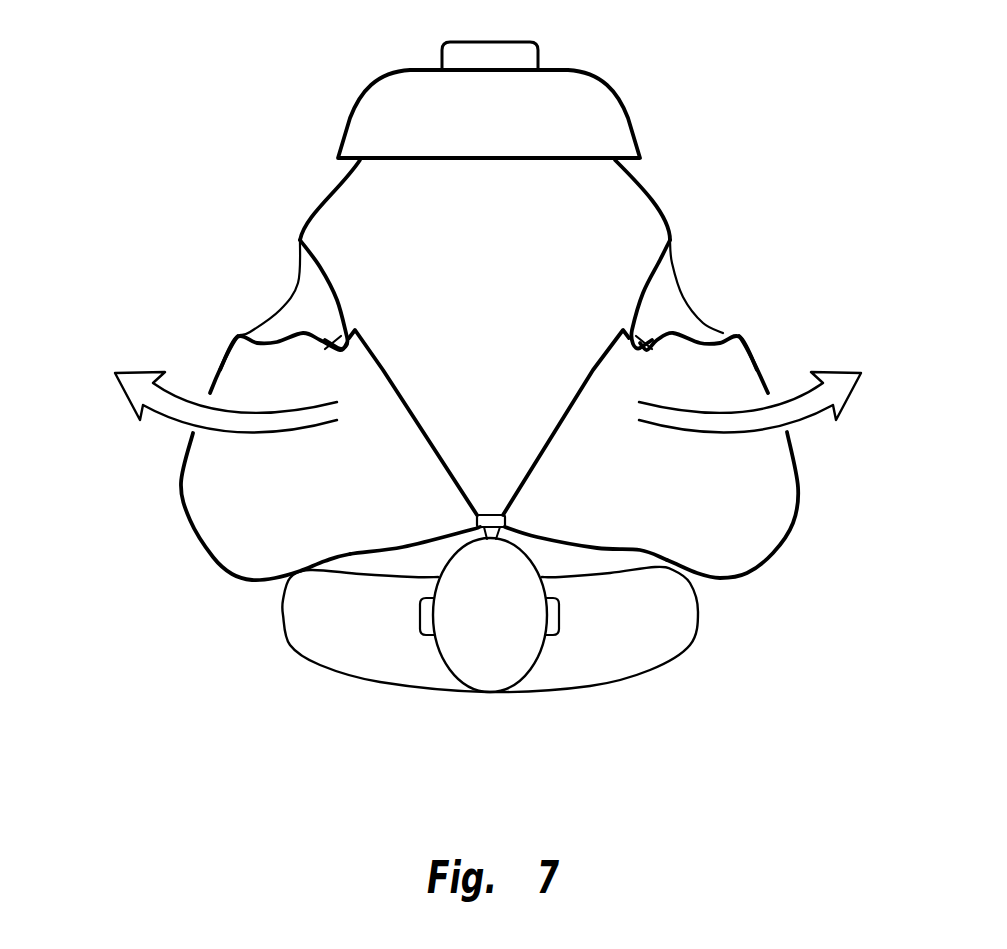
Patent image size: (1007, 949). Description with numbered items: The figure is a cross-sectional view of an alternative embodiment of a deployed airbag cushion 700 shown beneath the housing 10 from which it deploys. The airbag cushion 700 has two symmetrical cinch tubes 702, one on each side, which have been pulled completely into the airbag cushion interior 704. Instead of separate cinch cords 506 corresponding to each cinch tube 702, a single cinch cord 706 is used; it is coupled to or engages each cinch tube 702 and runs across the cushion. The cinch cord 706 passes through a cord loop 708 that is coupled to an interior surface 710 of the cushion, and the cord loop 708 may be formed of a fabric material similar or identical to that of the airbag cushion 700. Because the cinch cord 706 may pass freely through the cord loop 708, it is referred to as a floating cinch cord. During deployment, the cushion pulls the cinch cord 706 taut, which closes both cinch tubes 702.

The airbag cushion 700 is at (213, 151).
The housing 10 is at (505, 127).
The airbag cushion interior 704 is at (512, 282).
The cinch tubes 702 is at (303, 303).
The cinch cord 706 is at (407, 420).
The cinch cords 506 is at (555, 437).
The interior surface 710 is at (597, 550).
The cord loop 708 is at (490, 515).